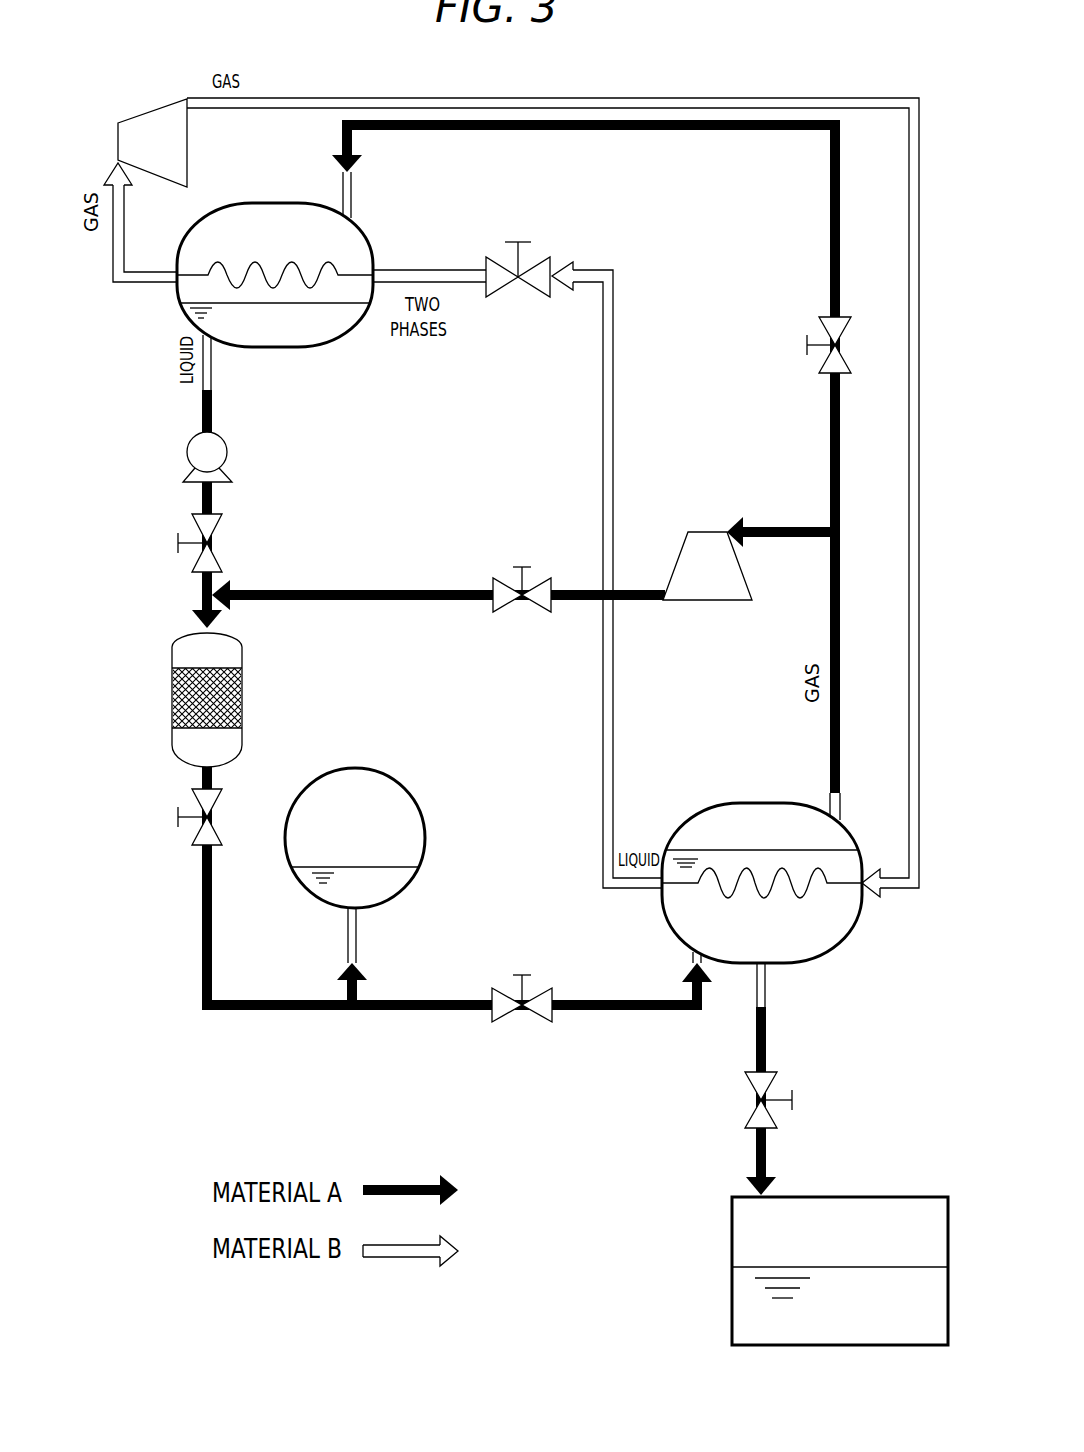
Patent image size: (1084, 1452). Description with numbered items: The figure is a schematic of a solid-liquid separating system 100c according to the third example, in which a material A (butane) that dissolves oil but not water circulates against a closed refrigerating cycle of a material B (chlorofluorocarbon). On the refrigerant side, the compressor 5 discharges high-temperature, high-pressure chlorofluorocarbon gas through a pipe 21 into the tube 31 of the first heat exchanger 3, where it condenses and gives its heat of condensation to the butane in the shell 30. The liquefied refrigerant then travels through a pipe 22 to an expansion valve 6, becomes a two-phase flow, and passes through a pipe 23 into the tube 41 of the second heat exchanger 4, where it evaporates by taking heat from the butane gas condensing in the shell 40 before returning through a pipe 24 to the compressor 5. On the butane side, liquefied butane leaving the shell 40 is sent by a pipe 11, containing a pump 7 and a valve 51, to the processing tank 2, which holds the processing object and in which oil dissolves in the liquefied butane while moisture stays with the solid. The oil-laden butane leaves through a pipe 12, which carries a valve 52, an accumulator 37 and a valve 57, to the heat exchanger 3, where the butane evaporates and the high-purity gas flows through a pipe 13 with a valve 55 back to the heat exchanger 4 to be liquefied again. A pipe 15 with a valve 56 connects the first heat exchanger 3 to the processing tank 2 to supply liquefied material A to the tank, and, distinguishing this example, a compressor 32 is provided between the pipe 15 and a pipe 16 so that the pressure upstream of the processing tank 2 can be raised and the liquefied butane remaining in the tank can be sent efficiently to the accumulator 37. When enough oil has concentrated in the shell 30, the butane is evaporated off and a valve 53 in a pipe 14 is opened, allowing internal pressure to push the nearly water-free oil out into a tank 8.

The solid-liquid separating system 100c is at (562, 80).
The processing tank 2 is at (243, 695).
The first heat exchanger 3 is at (853, 927).
The second heat exchanger 4 is at (338, 336).
The compressor 5 is at (158, 110).
The expansion valve 6 is at (521, 240).
The pump 7 is at (228, 452).
The tank 8 is at (730, 1300).
The pipe 11 is at (213, 396).
The pipe 12 is at (420, 1000).
The pipe 13 is at (716, 128).
The pipe 14 is at (768, 1018).
The pipe 15 is at (412, 600).
The pipe 16 is at (796, 547).
The pipe 21 is at (788, 96).
The pipe 22 is at (618, 888).
The pipe 23 is at (458, 283).
The pipe 24 is at (113, 263).
The shell 30 is at (710, 823).
The tube 31 is at (827, 877).
The compressor 32 is at (710, 600).
The accumulator 37 is at (420, 796).
The shell 40 is at (197, 240).
The tube 41 is at (338, 272).
The valve 51 is at (222, 548).
The valve 52 is at (192, 835).
The valve 53 is at (777, 1120).
The valve 55 is at (827, 316).
The valve 56 is at (532, 613).
The valve 57 is at (536, 990).